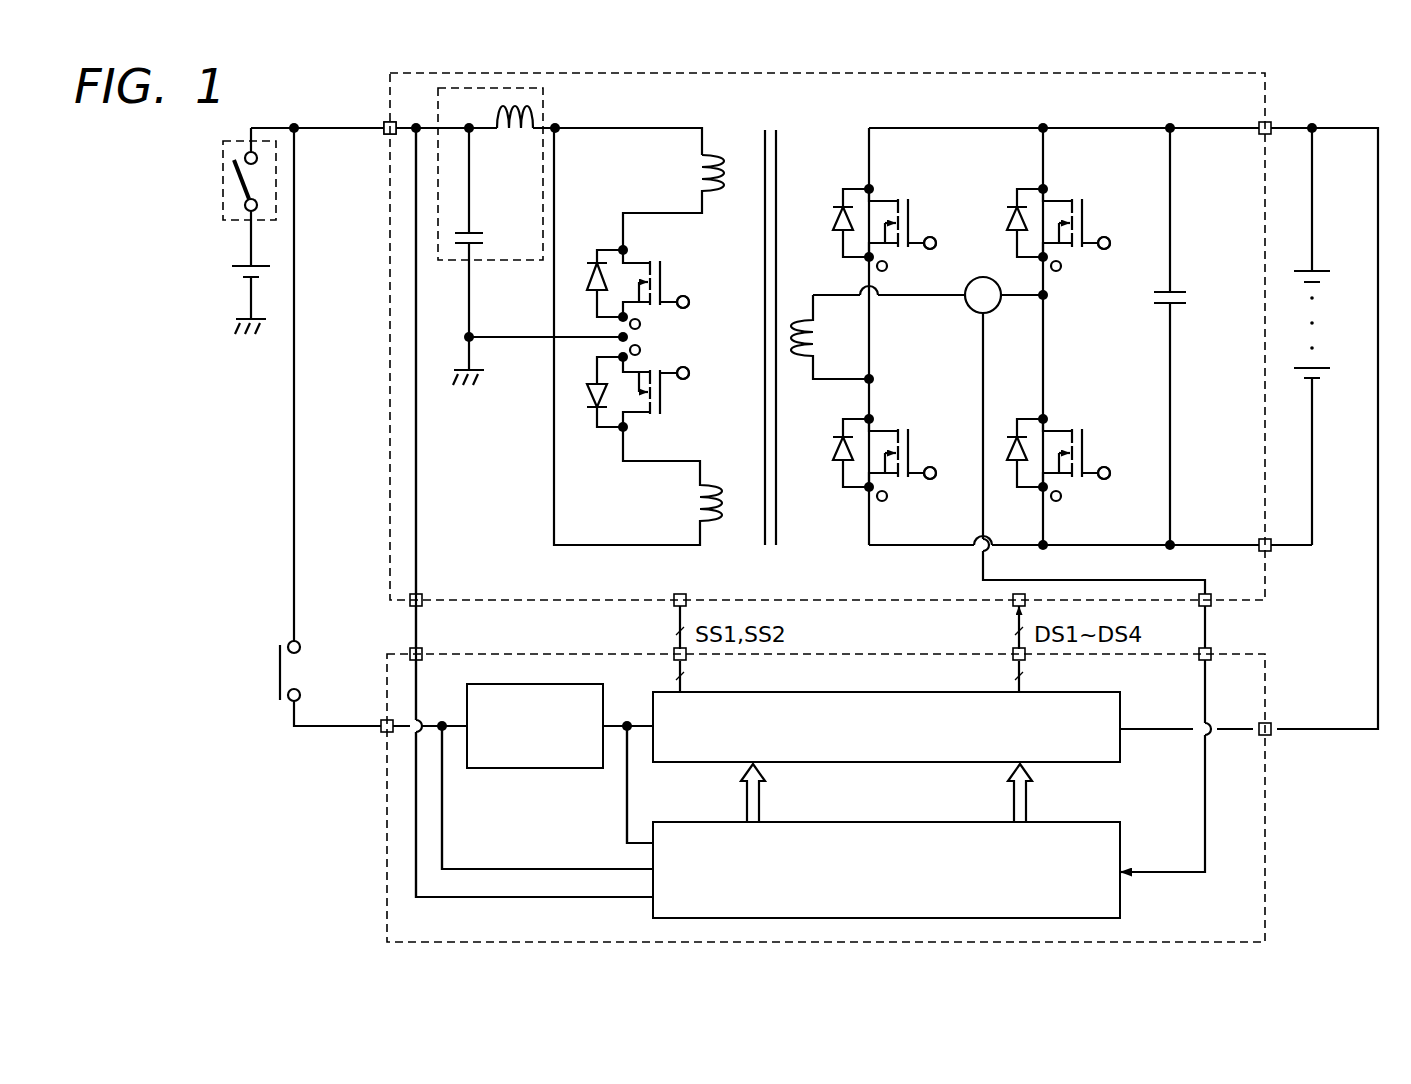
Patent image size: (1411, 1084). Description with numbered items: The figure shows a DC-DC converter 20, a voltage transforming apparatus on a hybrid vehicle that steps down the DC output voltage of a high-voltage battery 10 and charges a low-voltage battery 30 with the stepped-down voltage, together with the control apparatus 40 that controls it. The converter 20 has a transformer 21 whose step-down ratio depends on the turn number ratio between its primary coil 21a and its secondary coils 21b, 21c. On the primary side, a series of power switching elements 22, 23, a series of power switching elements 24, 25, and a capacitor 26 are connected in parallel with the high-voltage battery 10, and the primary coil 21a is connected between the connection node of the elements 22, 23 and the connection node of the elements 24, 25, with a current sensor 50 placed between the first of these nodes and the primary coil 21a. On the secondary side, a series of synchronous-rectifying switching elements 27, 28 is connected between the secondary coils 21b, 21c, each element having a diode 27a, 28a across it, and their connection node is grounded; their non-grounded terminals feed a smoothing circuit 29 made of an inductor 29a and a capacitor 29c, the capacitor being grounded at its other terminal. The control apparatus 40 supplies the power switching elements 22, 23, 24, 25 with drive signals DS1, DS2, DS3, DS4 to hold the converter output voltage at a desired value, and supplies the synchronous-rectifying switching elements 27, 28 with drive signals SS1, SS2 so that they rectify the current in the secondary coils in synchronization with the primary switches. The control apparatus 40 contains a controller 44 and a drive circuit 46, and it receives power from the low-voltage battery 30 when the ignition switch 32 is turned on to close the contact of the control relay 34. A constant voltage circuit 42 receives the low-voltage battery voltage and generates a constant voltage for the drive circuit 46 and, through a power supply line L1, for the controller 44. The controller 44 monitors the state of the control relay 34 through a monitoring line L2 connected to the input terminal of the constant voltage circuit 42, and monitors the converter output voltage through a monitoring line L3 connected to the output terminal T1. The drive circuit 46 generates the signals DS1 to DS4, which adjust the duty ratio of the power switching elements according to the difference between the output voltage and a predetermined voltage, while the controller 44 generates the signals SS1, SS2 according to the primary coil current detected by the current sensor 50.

The high-voltage battery 10 is at (1314, 270).
The DC-DC converter 20 is at (1267, 580).
The transformer 21 is at (807, 555).
The primary coil 21a is at (801, 318).
The secondary coil 21b is at (700, 172).
The secondary coil 21c is at (698, 505).
The power switching element 22 is at (1054, 200).
The power switching element 23 is at (1054, 430).
The power switching element 24 is at (880, 200).
The power switching element 25 is at (880, 430).
The capacitor 26 is at (1173, 290).
The synchronous-rectifying switching element 27 is at (650, 260).
The diode 27a is at (597, 258).
The synchronous-rectifying switching element 28 is at (640, 372).
The diode 28a is at (591, 412).
The smoothing circuit 29 is at (506, 262).
The inductor 29a is at (513, 122).
The capacitor 29c is at (472, 230).
The low-voltage battery 30 is at (243, 264).
The ignition switch 32 is at (222, 160).
The control relay 34 is at (308, 636).
The control apparatus 40 is at (1267, 896).
The constant voltage circuit 42 is at (493, 770).
The controller 44 is at (1122, 840).
The drive circuit 46 is at (1122, 750).
The current sensor 50 is at (982, 276).
The output terminal T1 is at (386, 134).
The power supply line L1 is at (629, 800).
The monitoring line L2 is at (530, 868).
The monitoring line L3 is at (420, 530).
The drive signal SS1 is at (738, 270).
The drive signal SS2 is at (692, 381).
The drive signal DS1 is at (1108, 236).
The drive signal DS2 is at (1108, 466).
The drive signal DS3 is at (935, 236).
The drive signal DS4 is at (935, 466).